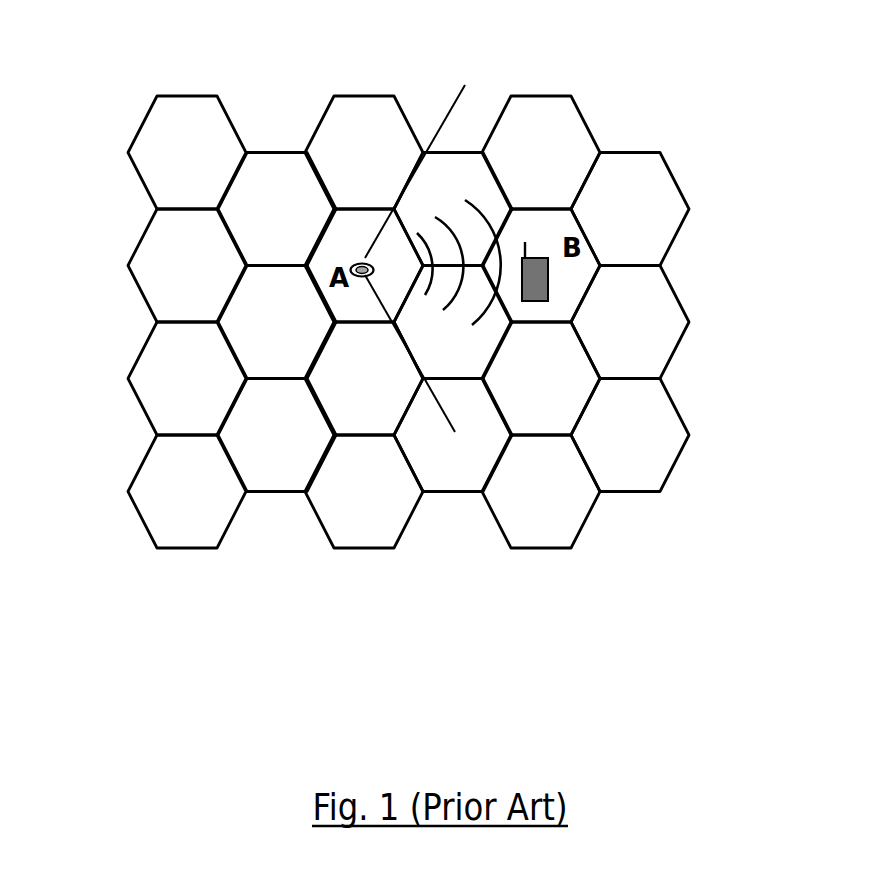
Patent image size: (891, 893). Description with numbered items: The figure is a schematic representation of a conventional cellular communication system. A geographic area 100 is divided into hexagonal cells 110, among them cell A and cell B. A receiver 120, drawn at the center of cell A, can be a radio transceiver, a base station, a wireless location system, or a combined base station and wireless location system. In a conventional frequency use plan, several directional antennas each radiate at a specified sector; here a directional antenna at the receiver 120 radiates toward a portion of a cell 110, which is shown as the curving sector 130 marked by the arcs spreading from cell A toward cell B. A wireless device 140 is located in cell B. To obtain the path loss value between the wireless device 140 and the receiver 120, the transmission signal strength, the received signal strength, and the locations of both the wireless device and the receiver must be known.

The geographic area 100 is at (842, 81).
The cells 110 is at (684, 476).
The receiver 120 is at (355, 258).
The sector 130 is at (431, 239).
The wireless device 140 is at (538, 240).